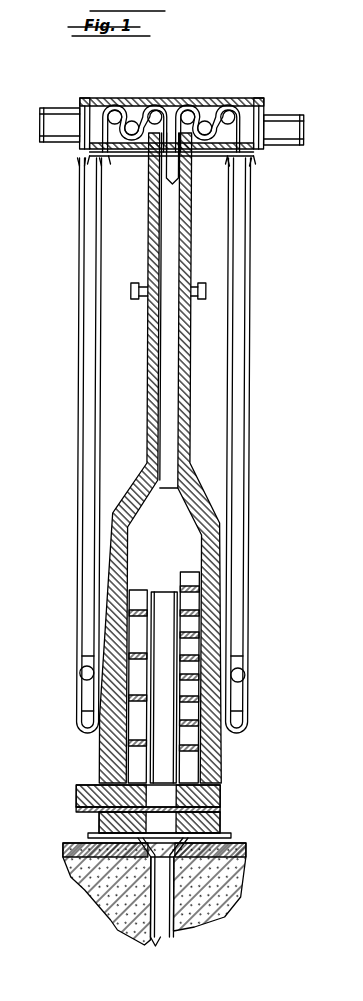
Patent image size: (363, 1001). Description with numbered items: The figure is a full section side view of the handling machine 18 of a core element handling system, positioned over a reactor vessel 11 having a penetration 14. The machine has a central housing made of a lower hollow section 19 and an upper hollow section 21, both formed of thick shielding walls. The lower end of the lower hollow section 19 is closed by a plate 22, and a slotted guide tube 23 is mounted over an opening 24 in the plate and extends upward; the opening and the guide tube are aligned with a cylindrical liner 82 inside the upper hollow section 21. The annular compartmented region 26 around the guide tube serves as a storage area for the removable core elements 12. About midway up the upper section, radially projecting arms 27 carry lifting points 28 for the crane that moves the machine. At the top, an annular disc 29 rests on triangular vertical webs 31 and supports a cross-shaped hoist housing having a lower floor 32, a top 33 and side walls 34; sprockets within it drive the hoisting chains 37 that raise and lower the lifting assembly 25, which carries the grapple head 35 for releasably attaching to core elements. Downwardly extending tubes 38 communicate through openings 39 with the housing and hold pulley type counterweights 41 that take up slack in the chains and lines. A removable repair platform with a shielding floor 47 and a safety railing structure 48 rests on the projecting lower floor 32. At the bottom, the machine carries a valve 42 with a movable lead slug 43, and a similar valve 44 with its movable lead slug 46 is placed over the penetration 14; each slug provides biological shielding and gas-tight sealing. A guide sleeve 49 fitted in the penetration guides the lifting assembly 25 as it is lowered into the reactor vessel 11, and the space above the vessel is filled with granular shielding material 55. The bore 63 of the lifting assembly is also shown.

The reactor vessel 11 is at (248, 871).
The removable core elements 12 is at (190, 627).
The penetration 14 is at (172, 940).
The handling machine 18 is at (74, 388).
The lower hollow section 19 is at (112, 735).
The upper hollow section 21 is at (148, 405).
The plate 22 is at (120, 783).
The slotted guide tube 23 is at (145, 748).
The opening 24 is at (162, 780).
The lifting assembly 25 is at (170, 369).
The annular compartmented region 26 is at (128, 656).
The radially projecting arms 27 is at (200, 282).
The lifting points 28 is at (136, 300).
The annular disc 29 is at (176, 180).
The triangular vertical webs 31 is at (182, 200).
The lower floor 32 is at (240, 176).
The top 33 is at (208, 99).
The side walls 34 is at (267, 116).
The grapple head 35 is at (135, 530).
The hoisting chains 37 is at (174, 112).
The downwardly extending tubes 38 is at (76, 502).
The openings 39 is at (80, 160).
The pulley type counterweights 41 is at (80, 674).
The valve 42 is at (224, 799).
The movable lead slug 43 is at (78, 809).
The valve 44 is at (224, 827).
The movable lead slug 46 is at (104, 823).
The floor 47 is at (62, 142).
The safety railing structure 48 is at (82, 100).
The guide sleeve 49 is at (155, 946).
The granular shielding material 55 is at (248, 852).
The bore 63 is at (180, 397).
The cylindrical liner 82 is at (158, 352).